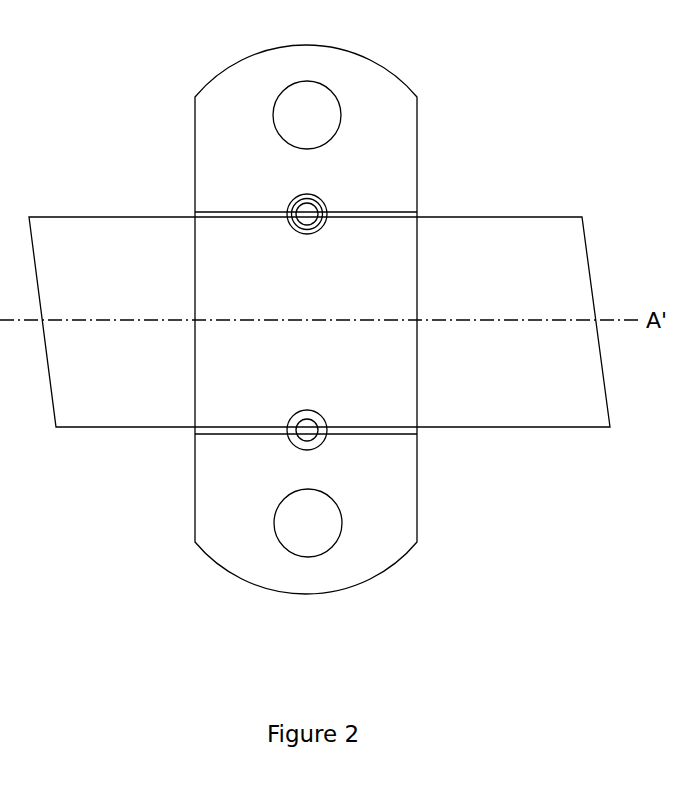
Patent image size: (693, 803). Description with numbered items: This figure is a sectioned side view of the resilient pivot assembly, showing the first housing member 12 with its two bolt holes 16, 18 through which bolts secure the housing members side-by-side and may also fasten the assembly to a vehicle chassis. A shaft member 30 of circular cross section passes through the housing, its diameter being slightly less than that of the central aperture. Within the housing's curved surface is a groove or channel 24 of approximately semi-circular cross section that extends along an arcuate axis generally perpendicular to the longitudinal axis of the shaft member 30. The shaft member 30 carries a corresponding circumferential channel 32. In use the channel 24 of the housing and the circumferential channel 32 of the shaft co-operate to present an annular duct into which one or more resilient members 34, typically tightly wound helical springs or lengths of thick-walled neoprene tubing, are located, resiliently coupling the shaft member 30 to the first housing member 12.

The first housing member 12 is at (388, 510).
The bolt hole 16 is at (307, 115).
The bolt hole 18 is at (308, 523).
The groove/channel 24 is at (290, 197).
The shaft member 30 is at (319, 323).
The circumferential channel 32 is at (310, 236).
The resilient member 34 is at (305, 410).